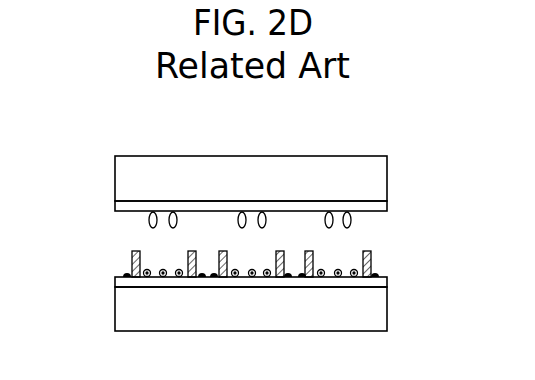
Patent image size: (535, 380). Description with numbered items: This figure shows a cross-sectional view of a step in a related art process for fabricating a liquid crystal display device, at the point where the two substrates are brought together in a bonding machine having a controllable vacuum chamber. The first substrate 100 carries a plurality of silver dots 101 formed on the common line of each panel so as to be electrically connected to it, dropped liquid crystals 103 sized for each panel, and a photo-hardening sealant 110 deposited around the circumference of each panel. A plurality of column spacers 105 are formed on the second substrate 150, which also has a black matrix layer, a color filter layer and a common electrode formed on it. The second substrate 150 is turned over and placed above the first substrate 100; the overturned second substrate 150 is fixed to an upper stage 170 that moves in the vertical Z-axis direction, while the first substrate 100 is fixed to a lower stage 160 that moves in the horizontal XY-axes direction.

The first substrate 100 is at (387, 280).
The silver dots 101 is at (127, 270).
The liquid crystals 103 is at (143, 278).
The column spacers 105 is at (347, 222).
The photo-hardening sealant 110 is at (131, 252).
The second substrate 150 is at (387, 209).
The lower stage 160 is at (387, 308).
The upper stage 170 is at (387, 182).